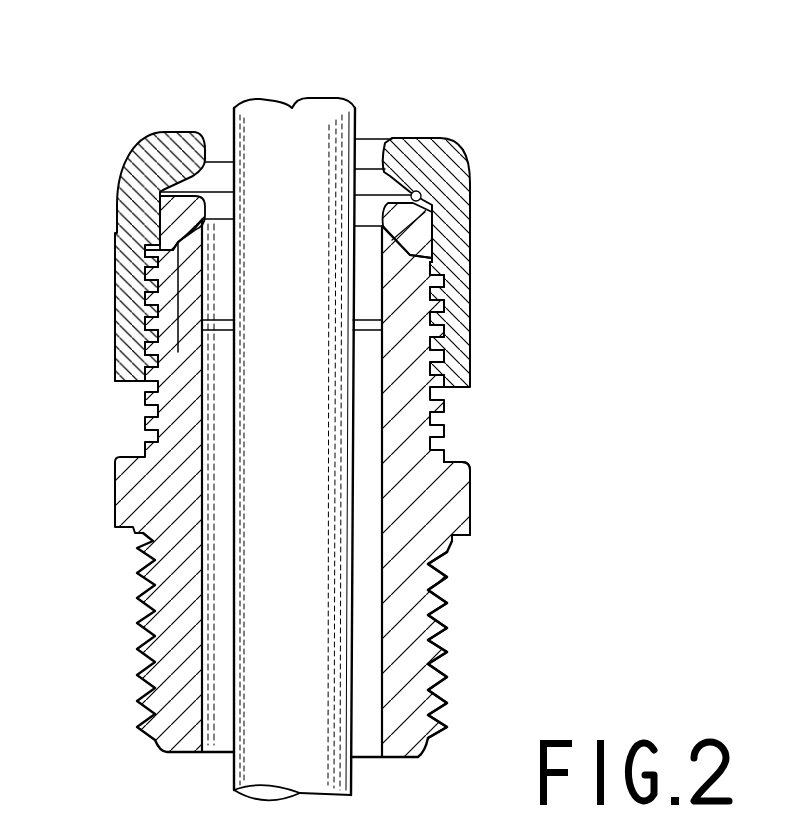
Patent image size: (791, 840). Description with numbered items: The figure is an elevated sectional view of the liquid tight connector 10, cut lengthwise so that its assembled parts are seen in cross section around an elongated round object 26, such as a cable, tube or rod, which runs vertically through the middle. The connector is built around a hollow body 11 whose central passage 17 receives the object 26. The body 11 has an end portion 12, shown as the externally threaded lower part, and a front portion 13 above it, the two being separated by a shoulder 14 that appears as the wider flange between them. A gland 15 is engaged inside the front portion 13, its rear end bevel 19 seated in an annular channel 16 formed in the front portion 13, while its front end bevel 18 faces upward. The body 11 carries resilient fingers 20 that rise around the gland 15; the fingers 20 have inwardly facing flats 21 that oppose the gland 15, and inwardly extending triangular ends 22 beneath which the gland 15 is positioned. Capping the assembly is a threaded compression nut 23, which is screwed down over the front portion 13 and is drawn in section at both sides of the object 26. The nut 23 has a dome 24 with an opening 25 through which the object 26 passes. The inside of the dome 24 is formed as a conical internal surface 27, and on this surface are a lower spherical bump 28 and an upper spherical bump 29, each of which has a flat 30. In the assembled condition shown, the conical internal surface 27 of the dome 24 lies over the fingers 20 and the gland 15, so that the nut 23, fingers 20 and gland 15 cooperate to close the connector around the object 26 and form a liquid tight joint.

The liquid tight connector 10 is at (437, 139).
The body 11 is at (444, 404).
The end portion 12 is at (420, 627).
The front portion 13 is at (157, 410).
The shoulder 14 is at (470, 505).
The gland 15 is at (193, 270).
The annular channel 16 is at (157, 340).
The central passage 17 is at (217, 498).
The front end bevel 18 is at (440, 197).
The rear end bevel 19 is at (153, 383).
The resilient fingers 20 is at (434, 250).
The flats 21 is at (443, 296).
The triangular ends 22 is at (137, 152).
The threaded compression nut 23 is at (158, 147).
The dome 24 is at (455, 158).
The opening 25 is at (374, 138).
The elongated round object 26 is at (292, 125).
The conical internal surface 27 is at (383, 138).
The lower spherical bump 28 is at (421, 194).
The upper spherical bump 29 is at (190, 135).
The flat 30 is at (210, 160).